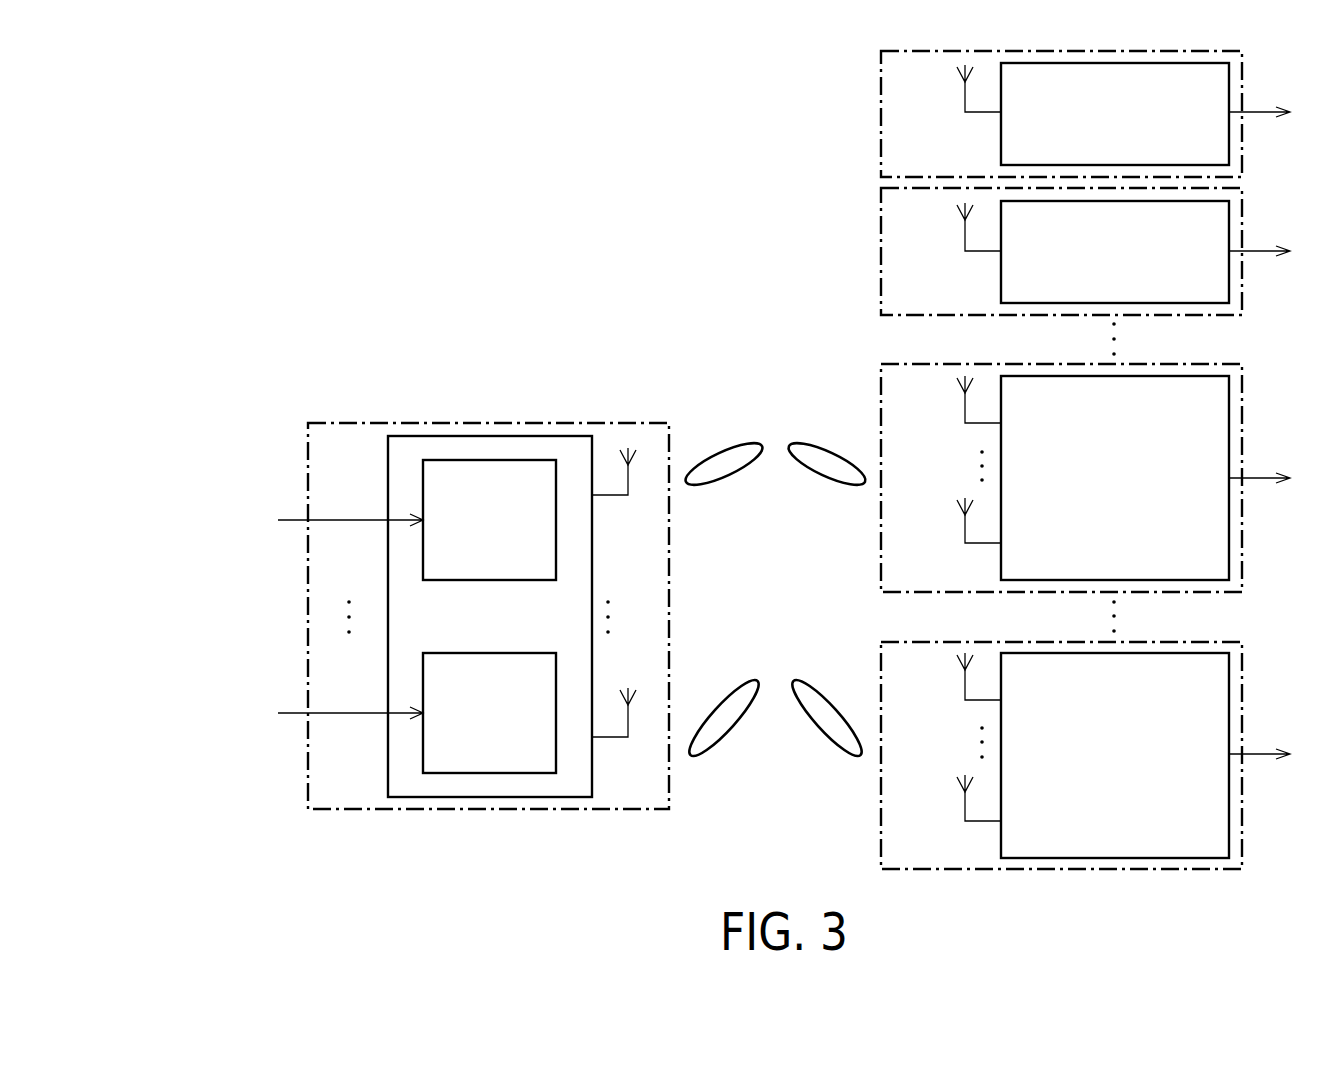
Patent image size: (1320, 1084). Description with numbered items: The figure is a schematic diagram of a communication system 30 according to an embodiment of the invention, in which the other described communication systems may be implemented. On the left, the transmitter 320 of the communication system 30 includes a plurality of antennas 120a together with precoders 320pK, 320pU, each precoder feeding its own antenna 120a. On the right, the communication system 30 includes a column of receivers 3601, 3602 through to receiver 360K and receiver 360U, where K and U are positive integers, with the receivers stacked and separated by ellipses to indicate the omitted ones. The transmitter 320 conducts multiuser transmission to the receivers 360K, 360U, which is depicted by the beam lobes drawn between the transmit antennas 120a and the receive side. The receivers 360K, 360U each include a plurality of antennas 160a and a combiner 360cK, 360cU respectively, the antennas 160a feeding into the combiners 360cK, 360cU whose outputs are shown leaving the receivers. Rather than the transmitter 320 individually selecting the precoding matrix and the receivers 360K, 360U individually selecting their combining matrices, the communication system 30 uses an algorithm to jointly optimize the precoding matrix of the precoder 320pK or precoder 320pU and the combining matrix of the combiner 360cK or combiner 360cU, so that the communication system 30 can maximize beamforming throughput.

The communication system 30 is at (458, 120).
The transmitter 320 is at (486, 423).
The precoder 320pK is at (528, 534).
The precoder 320pU is at (528, 727).
The antenna 120a is at (628, 737).
The receiver 3601 is at (881, 70).
The receiver 3602 is at (881, 208).
The receiver 360K is at (881, 383).
The receiver 360U is at (881, 840).
The antenna 160a is at (965, 96).
The combiner 360cK is at (1155, 493).
The combiner 360cU is at (1155, 770).